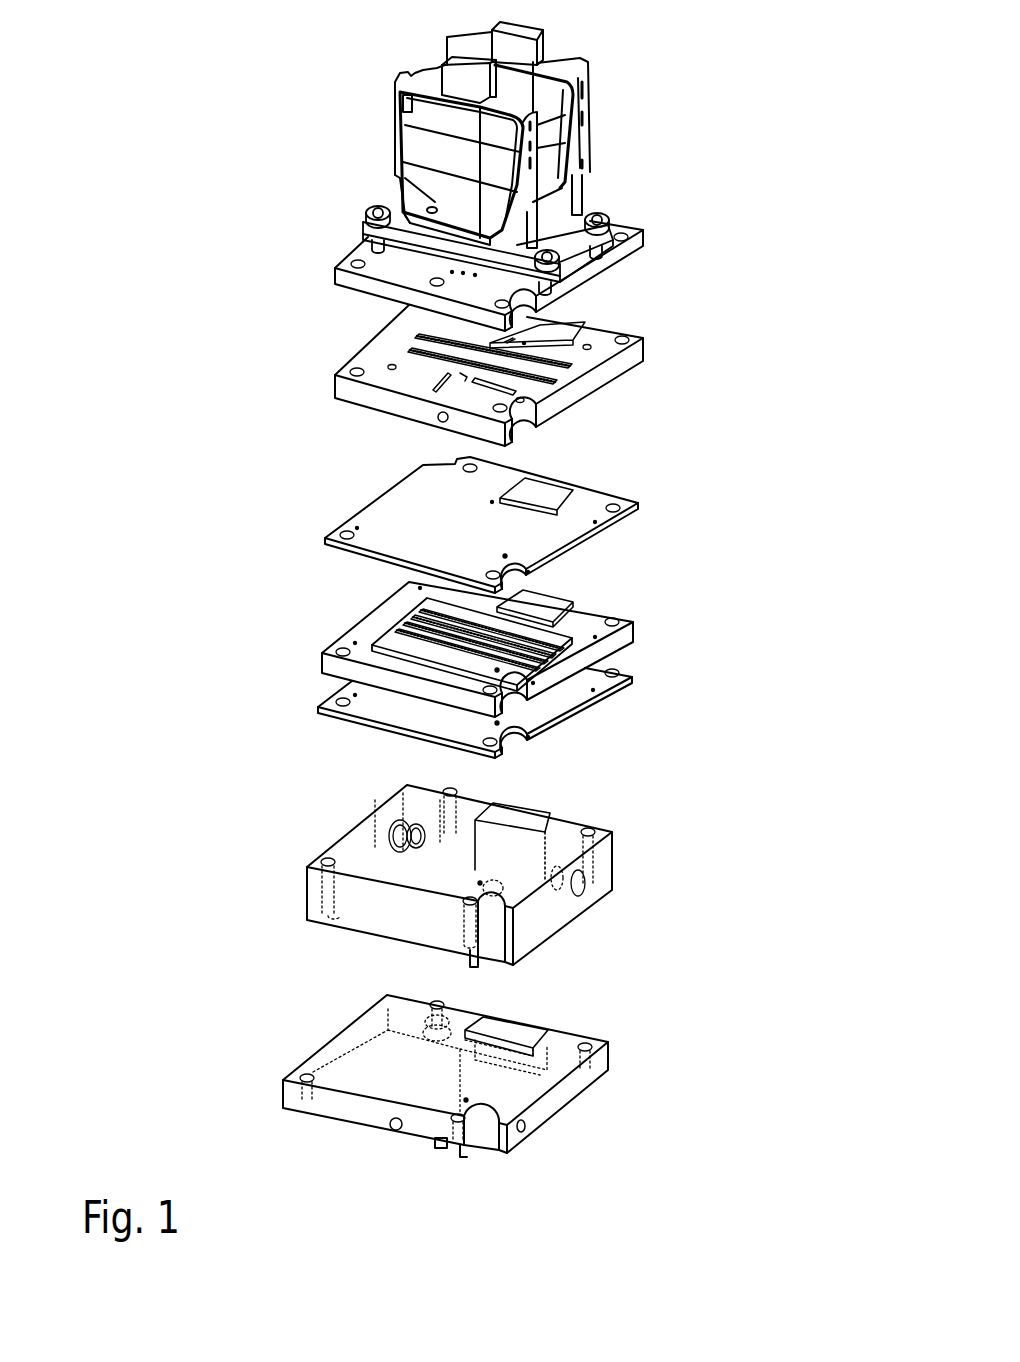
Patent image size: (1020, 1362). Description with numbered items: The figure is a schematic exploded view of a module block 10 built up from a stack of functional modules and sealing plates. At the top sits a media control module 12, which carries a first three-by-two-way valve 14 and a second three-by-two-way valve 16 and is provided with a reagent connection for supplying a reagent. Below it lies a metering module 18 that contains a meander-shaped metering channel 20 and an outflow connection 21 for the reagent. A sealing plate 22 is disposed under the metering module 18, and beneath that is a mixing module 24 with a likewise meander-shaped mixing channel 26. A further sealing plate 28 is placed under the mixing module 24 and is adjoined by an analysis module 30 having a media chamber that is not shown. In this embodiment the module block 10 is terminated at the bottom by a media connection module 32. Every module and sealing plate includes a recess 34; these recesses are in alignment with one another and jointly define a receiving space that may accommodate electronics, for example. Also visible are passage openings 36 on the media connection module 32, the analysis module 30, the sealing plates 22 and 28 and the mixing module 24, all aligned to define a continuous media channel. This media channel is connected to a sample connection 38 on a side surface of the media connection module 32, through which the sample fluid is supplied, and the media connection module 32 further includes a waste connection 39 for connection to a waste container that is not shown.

The module block 10 is at (220, 343).
The media control module 12 is at (648, 237).
The first 3/2-way valve 14 is at (408, 68).
The second 3/2-way valve 16 is at (582, 60).
The metering module 18 is at (521, 386).
The metering channel 20 is at (413, 345).
The outflow connection 21 is at (440, 420).
The sealing plate 22 is at (590, 538).
The mixing module 24 is at (482, 649).
The mixing channel 26 is at (375, 632).
The sealing plate 28 is at (562, 722).
The analysis module 30 is at (612, 868).
The media connection module 32 is at (508, 1100).
The recess 34 is at (550, 497).
The passage openings 36 is at (505, 556).
The sample connection 38 is at (526, 1127).
The waste connection 39 is at (396, 1130).